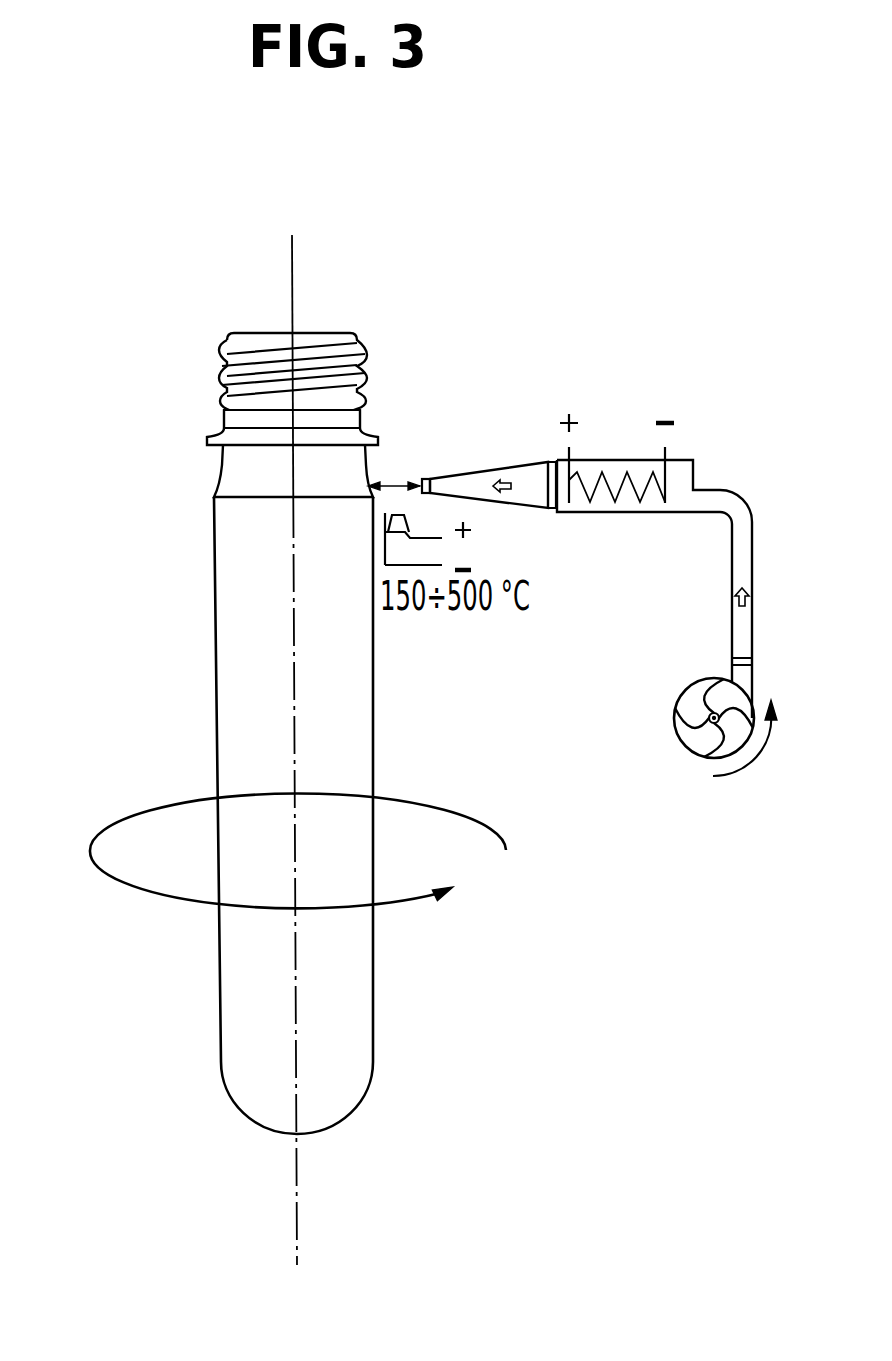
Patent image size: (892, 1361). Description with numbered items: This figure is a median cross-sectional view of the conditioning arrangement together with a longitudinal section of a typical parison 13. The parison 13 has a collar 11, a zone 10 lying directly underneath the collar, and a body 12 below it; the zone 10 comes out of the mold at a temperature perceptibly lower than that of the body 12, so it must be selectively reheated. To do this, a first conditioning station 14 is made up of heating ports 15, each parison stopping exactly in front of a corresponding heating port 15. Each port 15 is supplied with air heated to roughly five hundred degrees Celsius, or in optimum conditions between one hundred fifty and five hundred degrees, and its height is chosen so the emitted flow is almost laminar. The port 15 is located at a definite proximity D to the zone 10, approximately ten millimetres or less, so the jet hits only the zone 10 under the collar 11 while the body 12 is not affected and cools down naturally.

The zone underneath the collar 10 is at (215, 552).
The collar 11 is at (213, 433).
The body of the parison 12 is at (222, 1043).
The parison 13 is at (258, 333).
The first conditioning station 14 is at (696, 472).
The heating port 15 is at (443, 472).
The proximity D is at (396, 475).